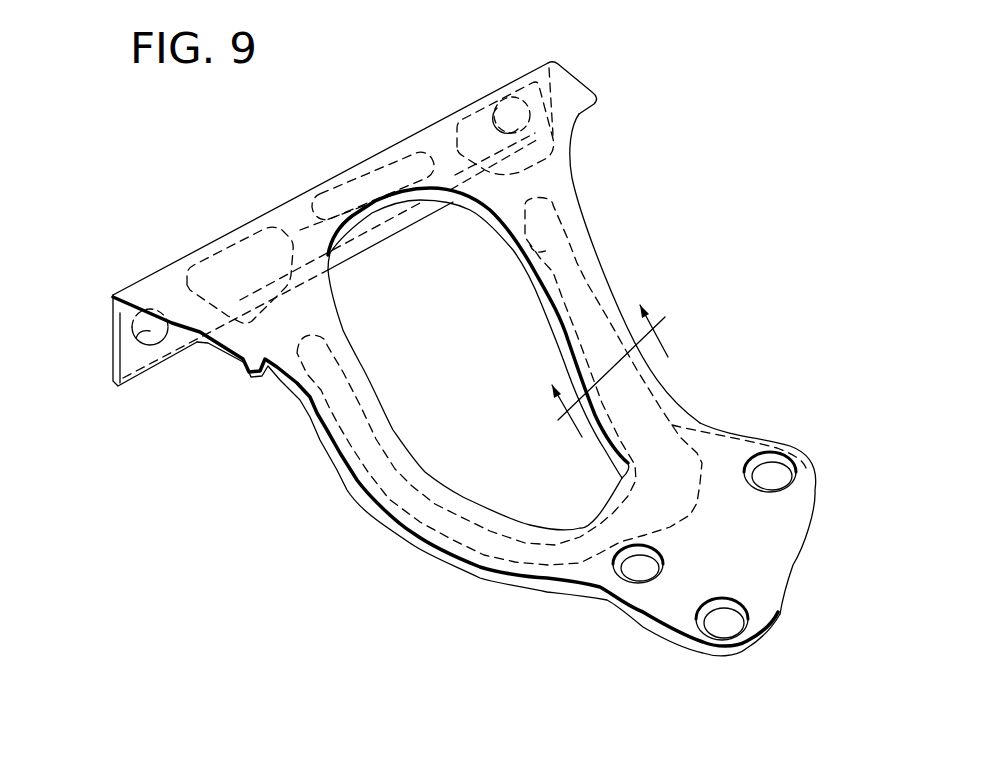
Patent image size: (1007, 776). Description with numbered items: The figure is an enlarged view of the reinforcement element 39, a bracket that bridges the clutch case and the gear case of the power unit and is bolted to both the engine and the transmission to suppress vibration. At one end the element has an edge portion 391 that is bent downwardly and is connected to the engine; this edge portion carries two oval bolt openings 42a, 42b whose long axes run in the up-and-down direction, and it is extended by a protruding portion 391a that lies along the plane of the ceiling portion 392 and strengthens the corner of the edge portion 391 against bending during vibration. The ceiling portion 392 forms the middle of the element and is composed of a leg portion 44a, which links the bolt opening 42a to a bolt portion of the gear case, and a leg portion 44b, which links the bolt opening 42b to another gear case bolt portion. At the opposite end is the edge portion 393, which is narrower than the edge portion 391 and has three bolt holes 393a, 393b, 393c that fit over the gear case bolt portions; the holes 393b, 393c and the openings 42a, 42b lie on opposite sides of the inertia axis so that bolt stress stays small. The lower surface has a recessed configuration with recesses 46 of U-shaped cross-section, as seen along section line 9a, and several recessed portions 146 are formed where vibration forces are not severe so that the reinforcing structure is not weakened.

The reinforcement element 39 is at (600, 167).
The edge portion 391 is at (108, 333).
The protruding portion 391a is at (158, 284).
The ceiling portion 392 is at (577, 195).
The edge portion 393 is at (793, 566).
The bolt hole 393a is at (634, 575).
The bolt hole 393b is at (723, 632).
The bolt hole 393c is at (765, 480).
The bolt opening 42a is at (150, 344).
The bolt opening 42b is at (507, 93).
The leg portion 44a is at (413, 503).
The leg portion 44b is at (600, 265).
The recesses 46 is at (527, 273).
The recessed portions 146 is at (243, 252).
The section line 9a- 9a is at (598, 355).